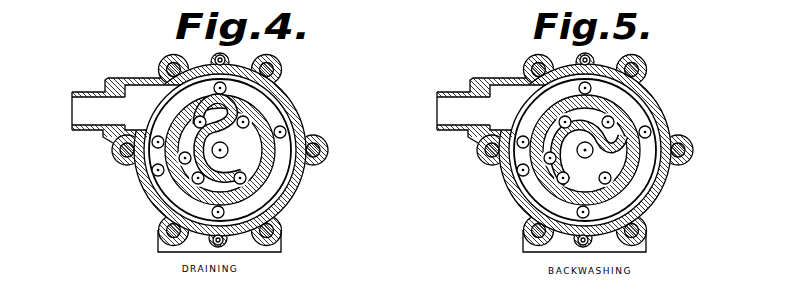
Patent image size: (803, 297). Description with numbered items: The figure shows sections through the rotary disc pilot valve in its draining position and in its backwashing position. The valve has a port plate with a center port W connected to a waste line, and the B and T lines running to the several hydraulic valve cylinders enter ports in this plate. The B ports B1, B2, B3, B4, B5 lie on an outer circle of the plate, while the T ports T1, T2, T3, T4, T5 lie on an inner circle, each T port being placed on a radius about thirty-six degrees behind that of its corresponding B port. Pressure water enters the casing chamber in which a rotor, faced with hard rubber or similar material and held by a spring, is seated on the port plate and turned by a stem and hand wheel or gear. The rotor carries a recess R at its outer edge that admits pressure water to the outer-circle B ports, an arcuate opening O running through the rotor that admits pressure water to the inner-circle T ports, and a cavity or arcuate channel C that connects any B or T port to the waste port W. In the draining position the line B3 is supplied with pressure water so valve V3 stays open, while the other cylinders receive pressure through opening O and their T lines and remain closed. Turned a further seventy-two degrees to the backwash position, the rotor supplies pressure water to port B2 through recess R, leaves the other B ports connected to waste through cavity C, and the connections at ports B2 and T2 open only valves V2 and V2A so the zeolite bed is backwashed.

In FIG. 4, the T port T1 is at (204, 96).
In FIG. 5, the T port T1 is at (566, 71).
In FIG. 4, the T port T2 is at (270, 192).
In FIG. 5, the T port T2 is at (652, 204).
In FIG. 4, the T port T3 is at (272, 110).
In FIG. 5, the T port T3 is at (649, 105).
In FIG. 4, the T port T4 is at (164, 190).
In FIG. 5, the T port T4 is at (509, 210).
In FIG. 4, the T port T5 is at (167, 204).
In FIG. 5, the T port T5 is at (508, 215).
In FIG. 4, the B port B1 is at (240, 73).
In FIG. 5, the B port B1 is at (608, 58).
In FIG. 4, the B port B2 is at (272, 214).
In FIG. 5, the B port B2 is at (641, 234).
In FIG. 4, the B port B3 is at (284, 124).
In FIG. 5, the B port B3 is at (610, 150).
In FIG. 4, the B port B4 is at (158, 152).
In FIG. 5, the B port B4 is at (493, 162).
In FIG. 4, the B port B5 is at (163, 178).
In FIG. 5, the B port B5 is at (496, 193).
In FIG. 4, the recess R is at (284, 171).
In FIG. 5, the recess R is at (618, 154).
In FIG. 4, the arcuate channel C is at (217, 126).
In FIG. 5, the arcuate channel C is at (587, 136).
In FIG. 4, the arcuate opening O is at (230, 136).
In FIG. 5, the arcuate opening O is at (589, 153).
In FIG. 4, the center port W is at (228, 145).
In FIG. 5, the center port W is at (585, 134).